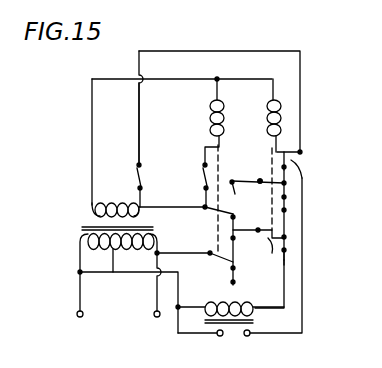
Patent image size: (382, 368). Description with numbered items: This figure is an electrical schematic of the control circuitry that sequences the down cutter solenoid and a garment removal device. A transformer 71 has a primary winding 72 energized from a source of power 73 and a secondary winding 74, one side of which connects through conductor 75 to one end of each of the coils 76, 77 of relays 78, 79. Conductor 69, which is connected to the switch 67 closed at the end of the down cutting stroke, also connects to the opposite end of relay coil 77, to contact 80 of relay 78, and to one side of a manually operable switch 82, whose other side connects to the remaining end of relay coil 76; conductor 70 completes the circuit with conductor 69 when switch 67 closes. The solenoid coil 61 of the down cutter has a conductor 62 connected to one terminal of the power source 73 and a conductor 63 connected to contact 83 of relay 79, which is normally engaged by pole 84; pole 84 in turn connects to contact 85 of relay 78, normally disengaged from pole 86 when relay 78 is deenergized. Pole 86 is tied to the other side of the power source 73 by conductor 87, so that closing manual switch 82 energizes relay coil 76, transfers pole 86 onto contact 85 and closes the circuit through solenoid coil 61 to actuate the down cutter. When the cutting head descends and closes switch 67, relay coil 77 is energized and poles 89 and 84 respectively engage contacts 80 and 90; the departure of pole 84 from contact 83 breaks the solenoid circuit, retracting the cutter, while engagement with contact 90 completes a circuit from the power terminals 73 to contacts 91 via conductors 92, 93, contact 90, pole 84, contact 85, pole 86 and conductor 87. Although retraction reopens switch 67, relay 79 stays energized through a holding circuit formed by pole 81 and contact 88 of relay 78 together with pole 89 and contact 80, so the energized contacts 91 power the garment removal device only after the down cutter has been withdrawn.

The solenoid coil 61 is at (245, 302).
The conductor 62 is at (179, 275).
The conductor 63 is at (284, 299).
The switch 67 is at (136, 180).
The conductor 69 is at (139, 116).
The conductor 70 is at (184, 207).
The transformer 71 is at (84, 226).
The primary winding 72 is at (118, 253).
The source of power 73 is at (83, 316).
The secondary winding 74 is at (97, 208).
The conductor 75 is at (91, 124).
The relay coil 76 is at (210, 108).
The relay coil 77 is at (267, 108).
The relay 78 is at (231, 200).
The relay 79 is at (270, 153).
The contact 80 is at (300, 170).
The pole 81 is at (214, 246).
The manually operable switch 82 is at (203, 178).
The contact 83 is at (287, 244).
The pole 84 is at (268, 264).
The contact 85 is at (258, 244).
The pole 86 is at (222, 259).
The conductor 87 is at (195, 253).
The contact 88 is at (257, 194).
The pole 89 is at (257, 171).
The contact 90 is at (300, 213).
The contacts 91 is at (236, 348).
The conductor 92 is at (190, 334).
The conductor 93 is at (303, 298).